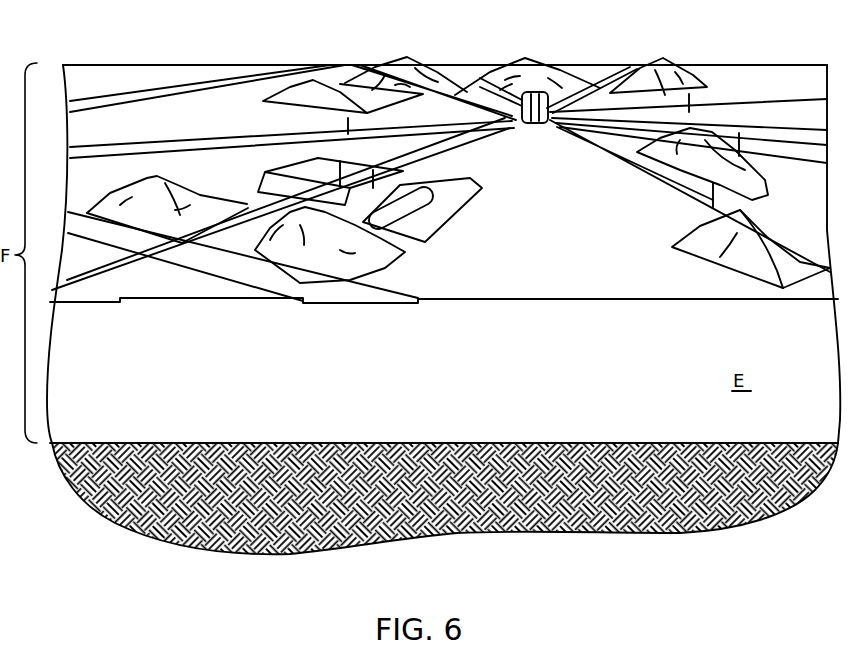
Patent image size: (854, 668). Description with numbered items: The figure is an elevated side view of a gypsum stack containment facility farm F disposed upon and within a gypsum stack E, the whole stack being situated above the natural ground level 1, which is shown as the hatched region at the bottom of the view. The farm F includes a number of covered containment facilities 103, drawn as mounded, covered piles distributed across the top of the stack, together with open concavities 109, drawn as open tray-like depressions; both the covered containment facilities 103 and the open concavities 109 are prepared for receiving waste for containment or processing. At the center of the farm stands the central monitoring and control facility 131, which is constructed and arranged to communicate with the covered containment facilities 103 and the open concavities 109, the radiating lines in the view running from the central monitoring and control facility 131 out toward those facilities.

The natural ground level 1 is at (150, 444).
The covered containment facility 103 is at (407, 57).
The open concavity 109 is at (267, 188).
The central monitoring and control facility 131 is at (530, 90).